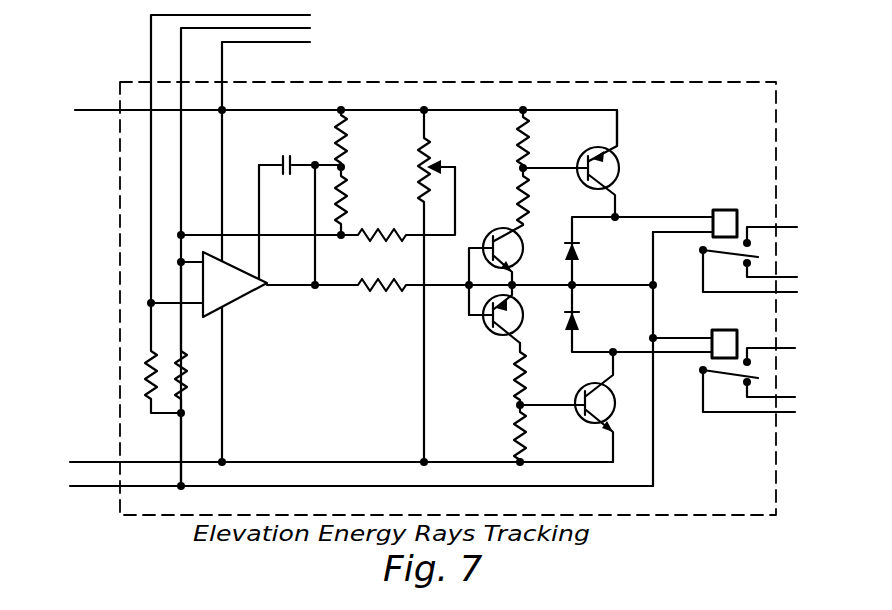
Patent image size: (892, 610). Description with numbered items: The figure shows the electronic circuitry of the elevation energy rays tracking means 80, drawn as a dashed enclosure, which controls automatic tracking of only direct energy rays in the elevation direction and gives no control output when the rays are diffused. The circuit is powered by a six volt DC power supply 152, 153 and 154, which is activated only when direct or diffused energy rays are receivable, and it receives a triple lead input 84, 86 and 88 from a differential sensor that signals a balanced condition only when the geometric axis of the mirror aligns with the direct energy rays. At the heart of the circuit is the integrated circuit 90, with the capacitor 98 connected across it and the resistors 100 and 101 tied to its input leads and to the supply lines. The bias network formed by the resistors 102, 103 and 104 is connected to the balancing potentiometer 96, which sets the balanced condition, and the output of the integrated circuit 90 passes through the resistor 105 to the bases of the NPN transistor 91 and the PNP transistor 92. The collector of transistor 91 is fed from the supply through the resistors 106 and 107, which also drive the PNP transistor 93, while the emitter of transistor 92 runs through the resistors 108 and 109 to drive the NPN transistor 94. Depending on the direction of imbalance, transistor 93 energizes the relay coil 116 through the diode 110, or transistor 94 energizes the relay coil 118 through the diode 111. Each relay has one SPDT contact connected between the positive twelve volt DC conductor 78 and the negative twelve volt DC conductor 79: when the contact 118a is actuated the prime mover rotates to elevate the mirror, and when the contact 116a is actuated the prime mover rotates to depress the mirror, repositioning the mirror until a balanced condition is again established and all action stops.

The elevation energy rays tracking means 80 is at (776, 490).
The input lead 88 is at (310, 15).
The input lead 84 is at (310, 28).
The input lead 86 is at (310, 42).
The DC power supply line 152 is at (75, 110).
The DC power supply line 154 is at (70, 462).
The DC power supply line 153 is at (70, 486).
The integrated circuit 90 is at (243, 300).
The capacitor 98 is at (282, 157).
The resistor 102 is at (347, 140).
The resistor 103 is at (347, 200).
The resistor 104 is at (388, 250).
The resistor 105 is at (385, 300).
The balancing potentiometer 96 is at (430, 150).
The resistor 106 is at (541, 122).
The resistor 107 is at (512, 196).
The transistor PNP 93 is at (619, 160).
The transistor NPN 91 is at (472, 248).
The transistor PNP 92 is at (476, 326).
The diode 110 is at (580, 255).
The diode 111 is at (580, 322).
The resistor 108 is at (511, 386).
The resistor 109 is at (511, 444).
The transistor NPN 94 is at (580, 420).
The relay coil 116 is at (706, 200).
The contact 116a is at (700, 255).
The relay coil 118 is at (705, 320).
The contact 118a is at (700, 375).
The positive 12 volt DC conductor 78 is at (803, 340).
The negative 12 volt DC conductor 79 is at (803, 389).
The resistor 100 is at (146, 376).
The resistor 101 is at (188, 376).